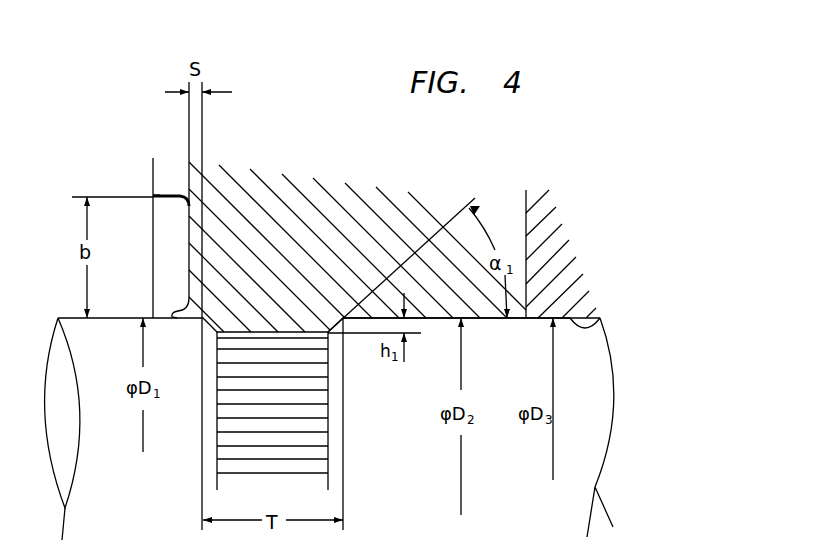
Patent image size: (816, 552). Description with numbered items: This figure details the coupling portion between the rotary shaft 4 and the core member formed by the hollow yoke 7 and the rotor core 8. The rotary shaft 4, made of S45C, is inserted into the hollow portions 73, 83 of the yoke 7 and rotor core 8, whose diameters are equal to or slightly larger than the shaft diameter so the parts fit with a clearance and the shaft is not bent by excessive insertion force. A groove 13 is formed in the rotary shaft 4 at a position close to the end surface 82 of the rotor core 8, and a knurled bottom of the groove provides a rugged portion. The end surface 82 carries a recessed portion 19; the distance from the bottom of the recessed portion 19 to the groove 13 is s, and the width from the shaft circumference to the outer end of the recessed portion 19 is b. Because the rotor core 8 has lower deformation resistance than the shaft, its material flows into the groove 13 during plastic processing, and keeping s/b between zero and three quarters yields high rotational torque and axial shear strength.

The rotary shaft 4 is at (80, 338).
The hollow yoke 7 is at (563, 275).
The rotor core 8 is at (173, 173).
The groove 13 is at (210, 373).
The recessed portion 19 is at (155, 197).
The hollow portion 73 is at (600, 318).
The end surface 82 is at (162, 213).
The hollow portion 83 is at (488, 321).